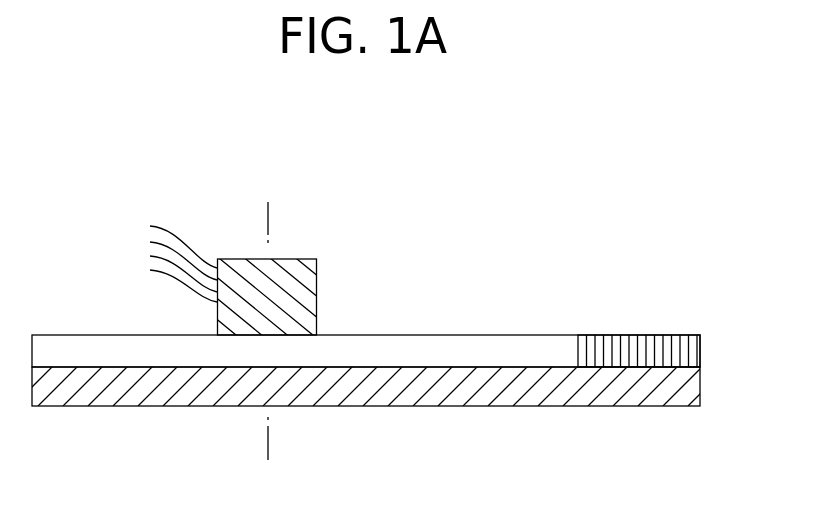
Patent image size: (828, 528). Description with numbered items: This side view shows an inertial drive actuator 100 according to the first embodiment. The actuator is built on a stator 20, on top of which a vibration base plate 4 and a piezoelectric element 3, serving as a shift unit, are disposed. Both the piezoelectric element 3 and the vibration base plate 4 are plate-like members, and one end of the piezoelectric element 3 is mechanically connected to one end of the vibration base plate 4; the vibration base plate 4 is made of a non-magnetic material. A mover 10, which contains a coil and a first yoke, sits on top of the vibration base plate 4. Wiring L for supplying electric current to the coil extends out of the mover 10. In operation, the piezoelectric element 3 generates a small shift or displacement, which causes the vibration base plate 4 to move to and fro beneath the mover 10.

The inertial drive actuator 100 is at (572, 227).
The mover 10 is at (302, 272).
The vibration base plate 4 is at (448, 343).
The stator 20 is at (217, 398).
The piezoelectric element 3 is at (632, 335).
The wiring L is at (143, 220).